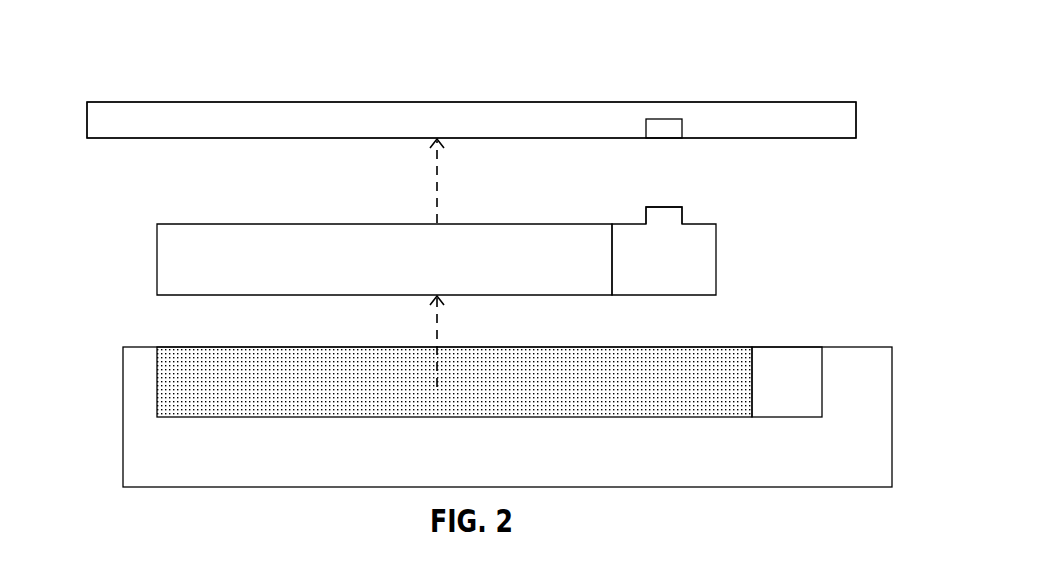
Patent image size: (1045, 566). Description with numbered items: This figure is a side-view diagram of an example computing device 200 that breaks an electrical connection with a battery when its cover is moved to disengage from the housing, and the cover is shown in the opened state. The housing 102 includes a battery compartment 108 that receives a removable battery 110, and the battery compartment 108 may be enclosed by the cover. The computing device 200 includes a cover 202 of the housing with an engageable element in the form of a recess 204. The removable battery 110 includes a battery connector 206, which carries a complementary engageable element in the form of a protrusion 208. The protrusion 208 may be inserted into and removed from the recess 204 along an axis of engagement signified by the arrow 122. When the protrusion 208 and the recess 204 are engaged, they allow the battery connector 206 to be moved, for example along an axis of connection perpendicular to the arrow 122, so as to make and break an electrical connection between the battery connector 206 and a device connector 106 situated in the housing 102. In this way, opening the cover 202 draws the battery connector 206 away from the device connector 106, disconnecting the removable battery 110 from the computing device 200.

The computing device 200 is at (257, 85).
The cover 202 is at (97, 115).
The recess 204 is at (657, 142).
The arrow 122 is at (418, 263).
The removable battery 110 is at (172, 260).
The battery connector 206 is at (631, 250).
The protrusion 208 is at (671, 207).
The housing 102 is at (123, 478).
The battery compartment 108 is at (178, 403).
The device connector 106 is at (805, 388).